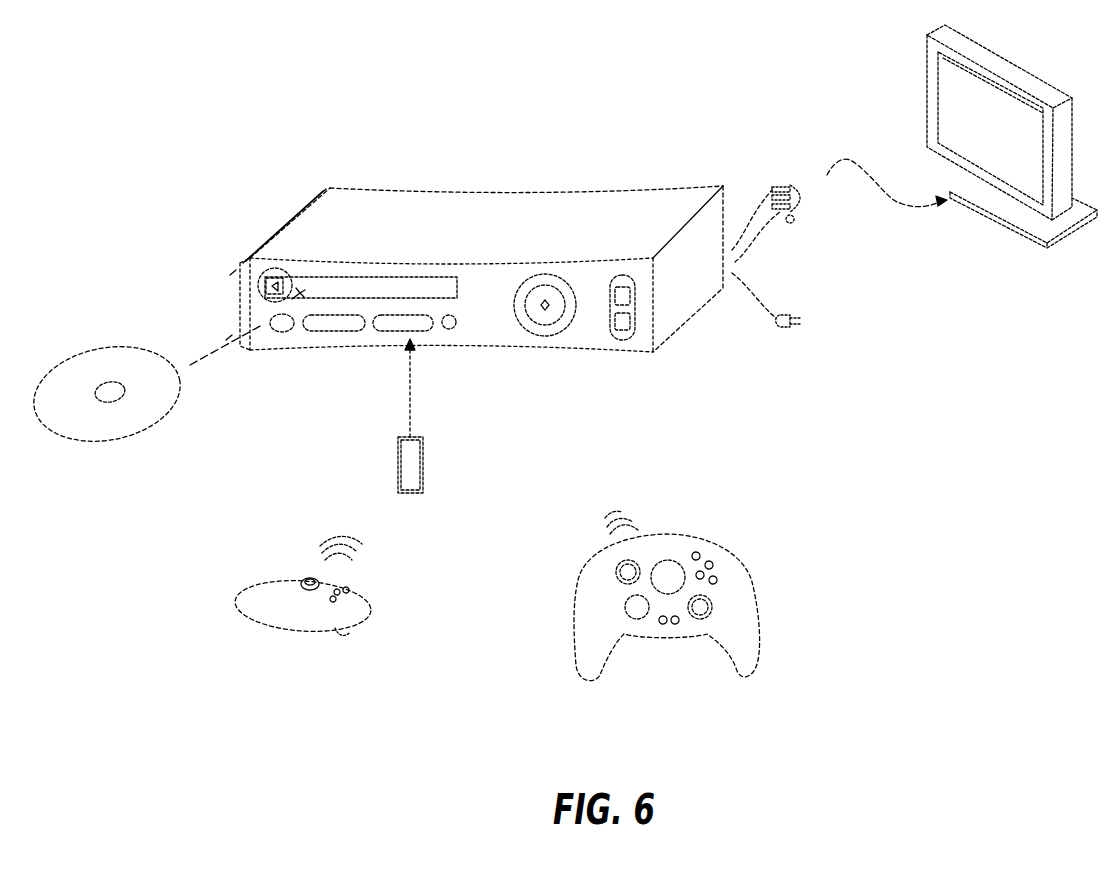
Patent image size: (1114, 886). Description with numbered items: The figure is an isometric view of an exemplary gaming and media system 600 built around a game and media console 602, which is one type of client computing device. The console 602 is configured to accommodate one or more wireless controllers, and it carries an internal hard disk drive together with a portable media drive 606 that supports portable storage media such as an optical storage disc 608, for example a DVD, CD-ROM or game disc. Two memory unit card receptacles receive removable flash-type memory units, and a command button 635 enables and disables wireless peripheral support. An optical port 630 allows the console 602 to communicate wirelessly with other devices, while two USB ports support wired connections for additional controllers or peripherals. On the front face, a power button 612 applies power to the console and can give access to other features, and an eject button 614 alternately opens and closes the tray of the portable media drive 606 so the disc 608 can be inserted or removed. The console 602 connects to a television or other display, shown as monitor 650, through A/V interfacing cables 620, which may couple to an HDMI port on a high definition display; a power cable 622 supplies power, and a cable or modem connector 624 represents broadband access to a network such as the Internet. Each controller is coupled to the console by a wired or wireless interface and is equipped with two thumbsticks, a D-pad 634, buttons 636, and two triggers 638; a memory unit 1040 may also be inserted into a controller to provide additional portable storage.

The gaming and media system 600 is at (512, 152).
The game and media console 602 is at (360, 197).
The portable media drive 606 is at (378, 275).
The optical storage disc 608 is at (118, 440).
The power button 612 is at (547, 337).
The eject button 614 is at (247, 271).
The A/V interfacing cables 620 is at (781, 185).
The power cable 622 is at (783, 328).
The cable or modem connector 624 is at (790, 224).
The optical port 630 is at (280, 332).
The D-pad 634 is at (625, 607).
The command button 635 is at (448, 330).
The buttons 636 is at (713, 566).
The triggers 638 is at (346, 633).
The monitor 650 is at (926, 92).
The memory unit 1040 is at (414, 494).